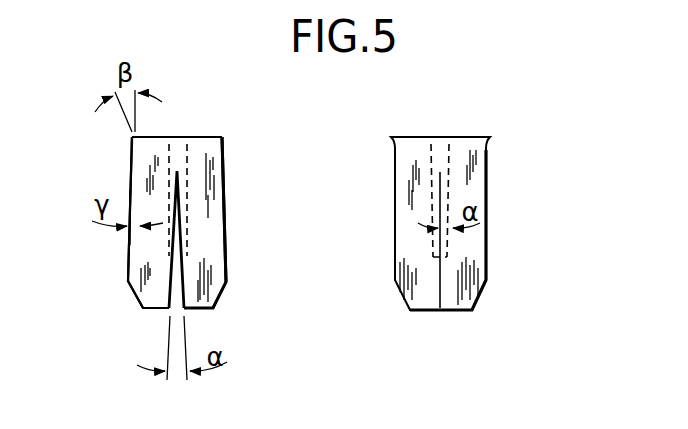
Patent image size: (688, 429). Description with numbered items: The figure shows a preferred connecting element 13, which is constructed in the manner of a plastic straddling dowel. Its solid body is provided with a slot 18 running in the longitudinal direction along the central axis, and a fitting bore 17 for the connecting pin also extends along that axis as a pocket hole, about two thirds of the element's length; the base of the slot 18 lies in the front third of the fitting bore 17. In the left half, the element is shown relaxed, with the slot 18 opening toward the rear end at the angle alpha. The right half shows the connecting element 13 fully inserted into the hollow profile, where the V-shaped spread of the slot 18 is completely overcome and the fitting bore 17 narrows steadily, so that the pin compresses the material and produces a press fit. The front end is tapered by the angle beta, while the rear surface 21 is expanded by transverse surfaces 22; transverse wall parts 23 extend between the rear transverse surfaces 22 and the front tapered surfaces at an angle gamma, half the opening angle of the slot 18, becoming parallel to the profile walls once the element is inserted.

The connecting element 13 is at (232, 252).
The fitting bore 17 is at (178, 147).
The slot 18 is at (175, 292).
The rear surface 21 is at (202, 136).
The transverse surfaces 22 is at (130, 138).
The wall parts 23 is at (223, 210).